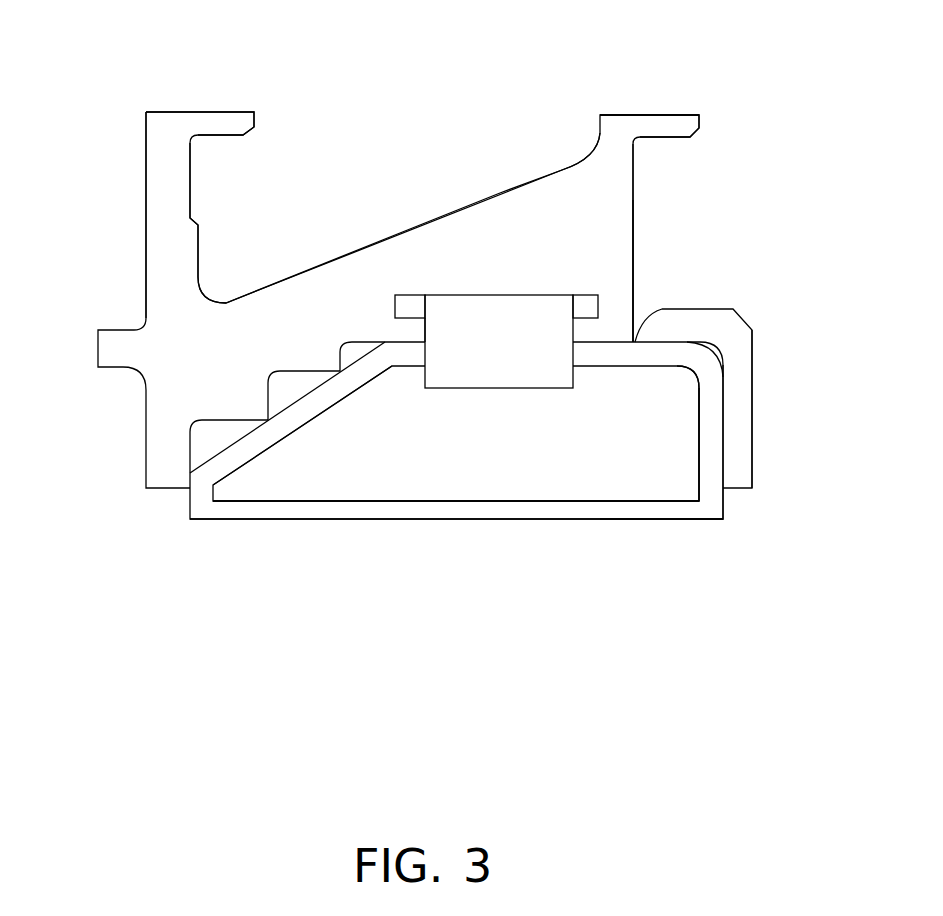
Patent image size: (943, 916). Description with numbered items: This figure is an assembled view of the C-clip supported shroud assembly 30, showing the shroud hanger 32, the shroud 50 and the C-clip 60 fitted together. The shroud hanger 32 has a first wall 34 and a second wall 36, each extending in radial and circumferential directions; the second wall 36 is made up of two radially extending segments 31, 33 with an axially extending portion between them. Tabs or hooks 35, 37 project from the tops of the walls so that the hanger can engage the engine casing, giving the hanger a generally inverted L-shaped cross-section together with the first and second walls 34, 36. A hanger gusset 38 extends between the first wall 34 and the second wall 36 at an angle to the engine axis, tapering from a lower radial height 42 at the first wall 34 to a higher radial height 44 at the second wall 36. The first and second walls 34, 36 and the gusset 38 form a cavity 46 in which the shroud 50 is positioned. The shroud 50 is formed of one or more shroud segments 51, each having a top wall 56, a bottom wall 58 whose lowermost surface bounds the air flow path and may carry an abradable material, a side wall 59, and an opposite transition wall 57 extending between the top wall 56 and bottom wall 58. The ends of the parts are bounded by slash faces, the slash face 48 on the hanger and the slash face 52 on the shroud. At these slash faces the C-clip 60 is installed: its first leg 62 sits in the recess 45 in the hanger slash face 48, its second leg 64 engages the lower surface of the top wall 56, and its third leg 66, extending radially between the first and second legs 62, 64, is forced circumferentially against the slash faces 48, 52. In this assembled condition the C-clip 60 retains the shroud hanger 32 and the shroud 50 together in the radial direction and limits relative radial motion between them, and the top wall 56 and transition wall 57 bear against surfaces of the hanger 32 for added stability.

The C-clip supported shroud assembly 30 is at (578, 70).
The radially extending segment 31 is at (753, 402).
The shroud hanger 32 is at (363, 146).
The radially extending segment 33 is at (633, 237).
The first wall 34 is at (143, 206).
The tab or hook 35 is at (200, 111).
The second wall 36 is at (637, 197).
The tab or hook 37 is at (676, 115).
The hanger gusset 38 is at (400, 238).
The lower radial height 42 is at (252, 293).
The higher radial height 44 is at (542, 178).
The recess 45 is at (607, 308).
The cavity 46 is at (195, 428).
The slash face 48 is at (478, 228).
The shroud 50 is at (614, 534).
The shroud segment 51 is at (700, 521).
The slash face 52 is at (438, 508).
The top wall 56 is at (635, 342).
The transition wall 57 is at (318, 416).
The bottom wall 58 is at (510, 519).
The side wall 59 is at (697, 437).
The C-clip 60 is at (530, 404).
The first leg 62 is at (455, 295).
The second leg 64 is at (480, 388).
The third leg 66 is at (445, 328).